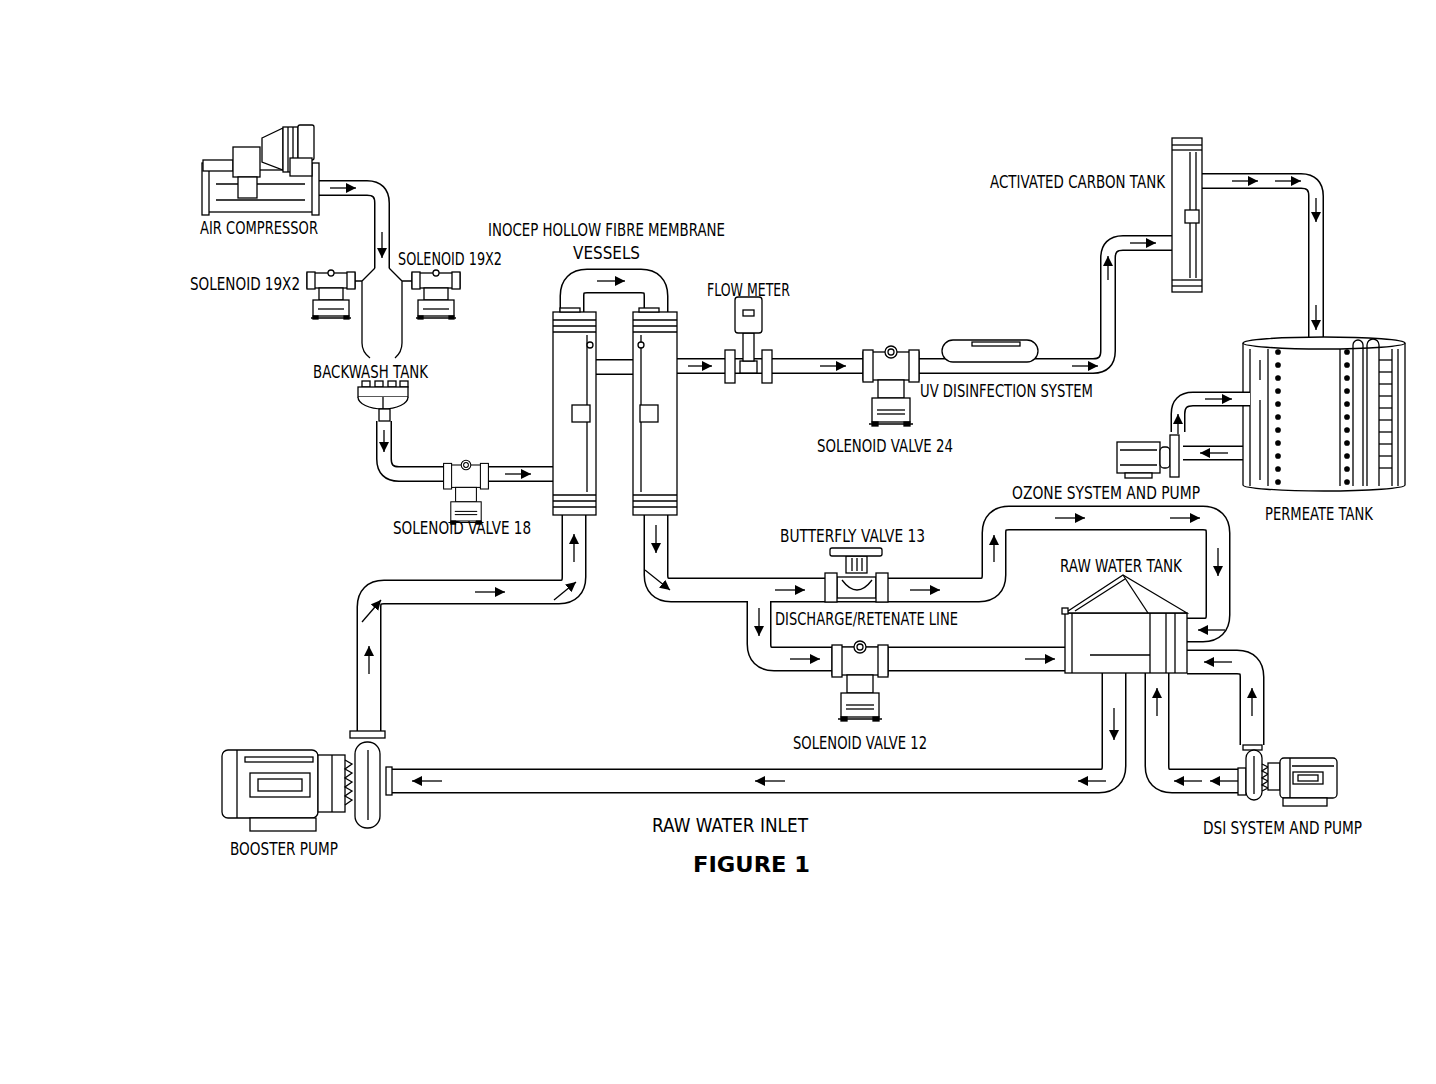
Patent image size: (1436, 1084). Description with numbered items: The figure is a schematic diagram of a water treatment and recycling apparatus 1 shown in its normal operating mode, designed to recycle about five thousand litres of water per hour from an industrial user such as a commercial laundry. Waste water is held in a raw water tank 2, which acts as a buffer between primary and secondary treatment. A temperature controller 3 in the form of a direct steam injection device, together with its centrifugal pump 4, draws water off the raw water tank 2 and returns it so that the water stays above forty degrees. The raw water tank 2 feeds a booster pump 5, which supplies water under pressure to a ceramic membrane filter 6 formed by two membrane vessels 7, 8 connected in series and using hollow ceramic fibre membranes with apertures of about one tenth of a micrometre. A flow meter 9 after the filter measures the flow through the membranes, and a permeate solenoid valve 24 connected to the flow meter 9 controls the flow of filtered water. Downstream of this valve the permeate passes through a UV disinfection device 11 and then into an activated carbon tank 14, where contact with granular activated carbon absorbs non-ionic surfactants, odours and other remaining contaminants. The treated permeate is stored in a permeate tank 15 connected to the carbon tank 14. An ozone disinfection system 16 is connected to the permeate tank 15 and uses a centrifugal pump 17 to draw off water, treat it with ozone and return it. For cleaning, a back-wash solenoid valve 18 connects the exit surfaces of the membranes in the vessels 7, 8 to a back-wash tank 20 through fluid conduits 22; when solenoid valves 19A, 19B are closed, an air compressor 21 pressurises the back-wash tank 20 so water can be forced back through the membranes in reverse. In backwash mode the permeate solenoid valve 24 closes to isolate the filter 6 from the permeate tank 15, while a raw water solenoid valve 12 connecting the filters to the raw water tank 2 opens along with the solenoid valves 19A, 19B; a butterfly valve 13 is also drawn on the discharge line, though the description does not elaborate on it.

The water treatment and recycling apparatus 1 is at (262, 648).
The raw water tank 2 is at (1085, 605).
The temperature controller 3 is at (1282, 705).
The pump 4 is at (1292, 760).
The booster pump 5 is at (380, 812).
The ceramic membrane filter 6 is at (680, 271).
The membrane vessel 7 is at (553, 386).
The membrane vessel 8 is at (677, 386).
The flow meter 9 is at (768, 332).
The UV disinfection device 11 is at (972, 340).
The raw water solenoid valve 12 is at (880, 670).
The butterfly valve 13 is at (872, 580).
The activated carbon tank 14 is at (1203, 173).
The permeate tank 15 is at (1278, 342).
The ozone disinfection system 16 is at (1156, 408).
The centrifugal pump 17 is at (1128, 445).
The back-wash solenoid valve 18 is at (447, 463).
The solenoid valve 19A is at (460, 283).
The solenoid valve 19B is at (315, 281).
The back-wash tank 20 is at (388, 260).
The air compressor 21 is at (303, 185).
The fluid conduits 22 is at (372, 490).
The permeate solenoid valve 24 is at (868, 352).